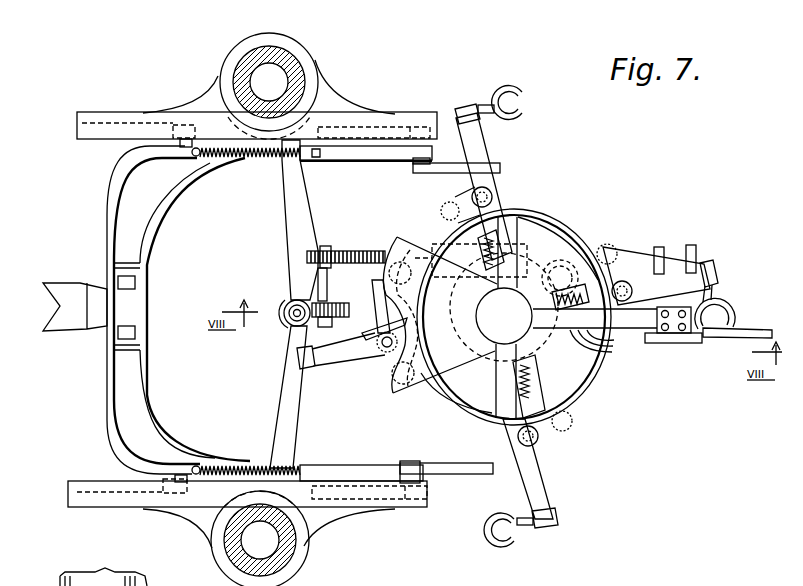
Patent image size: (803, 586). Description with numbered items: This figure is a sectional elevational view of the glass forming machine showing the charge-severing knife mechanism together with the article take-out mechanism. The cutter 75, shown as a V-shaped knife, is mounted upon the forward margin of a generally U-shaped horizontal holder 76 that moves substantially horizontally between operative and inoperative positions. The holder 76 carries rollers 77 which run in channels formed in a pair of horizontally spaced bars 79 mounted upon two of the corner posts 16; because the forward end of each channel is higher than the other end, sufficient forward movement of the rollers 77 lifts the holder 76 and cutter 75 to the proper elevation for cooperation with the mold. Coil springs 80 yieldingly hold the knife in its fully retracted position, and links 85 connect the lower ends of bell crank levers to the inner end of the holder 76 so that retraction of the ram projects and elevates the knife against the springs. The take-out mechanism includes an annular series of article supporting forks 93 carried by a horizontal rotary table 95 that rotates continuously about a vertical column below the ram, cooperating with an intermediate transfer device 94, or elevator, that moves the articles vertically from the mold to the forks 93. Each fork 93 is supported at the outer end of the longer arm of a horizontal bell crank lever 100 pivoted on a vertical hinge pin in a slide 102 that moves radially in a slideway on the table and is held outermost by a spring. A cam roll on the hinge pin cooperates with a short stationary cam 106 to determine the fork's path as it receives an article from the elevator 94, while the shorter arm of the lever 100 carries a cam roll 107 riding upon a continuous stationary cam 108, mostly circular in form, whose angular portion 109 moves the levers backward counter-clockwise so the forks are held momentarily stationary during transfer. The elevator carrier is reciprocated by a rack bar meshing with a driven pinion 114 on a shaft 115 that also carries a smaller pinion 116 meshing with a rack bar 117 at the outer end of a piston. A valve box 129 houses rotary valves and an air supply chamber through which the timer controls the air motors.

The corner posts 16 is at (288, 72).
The cutter 75 is at (72, 323).
The holder 76 is at (163, 392).
The rollers 77 is at (183, 125).
The bars 79 is at (337, 112).
The coil springs 80 is at (250, 160).
The links 85 is at (450, 173).
The article supporting forks 93 is at (513, 85).
The intermediate transfer device 94 is at (288, 300).
The rotary table 95 is at (560, 352).
The bell crank lever 100 is at (643, 272).
The slide 102 is at (523, 410).
The short stationary cam 106 is at (457, 350).
The cam roll 107 is at (442, 212).
The continuous stationary cam 108 is at (587, 214).
The angular portion 109 is at (430, 372).
The driven pinion 114 is at (330, 304).
The shaft 115 is at (328, 286).
The smaller pinion 116 is at (327, 252).
The rack bar 117 is at (387, 256).
The valve box 129 is at (690, 343).